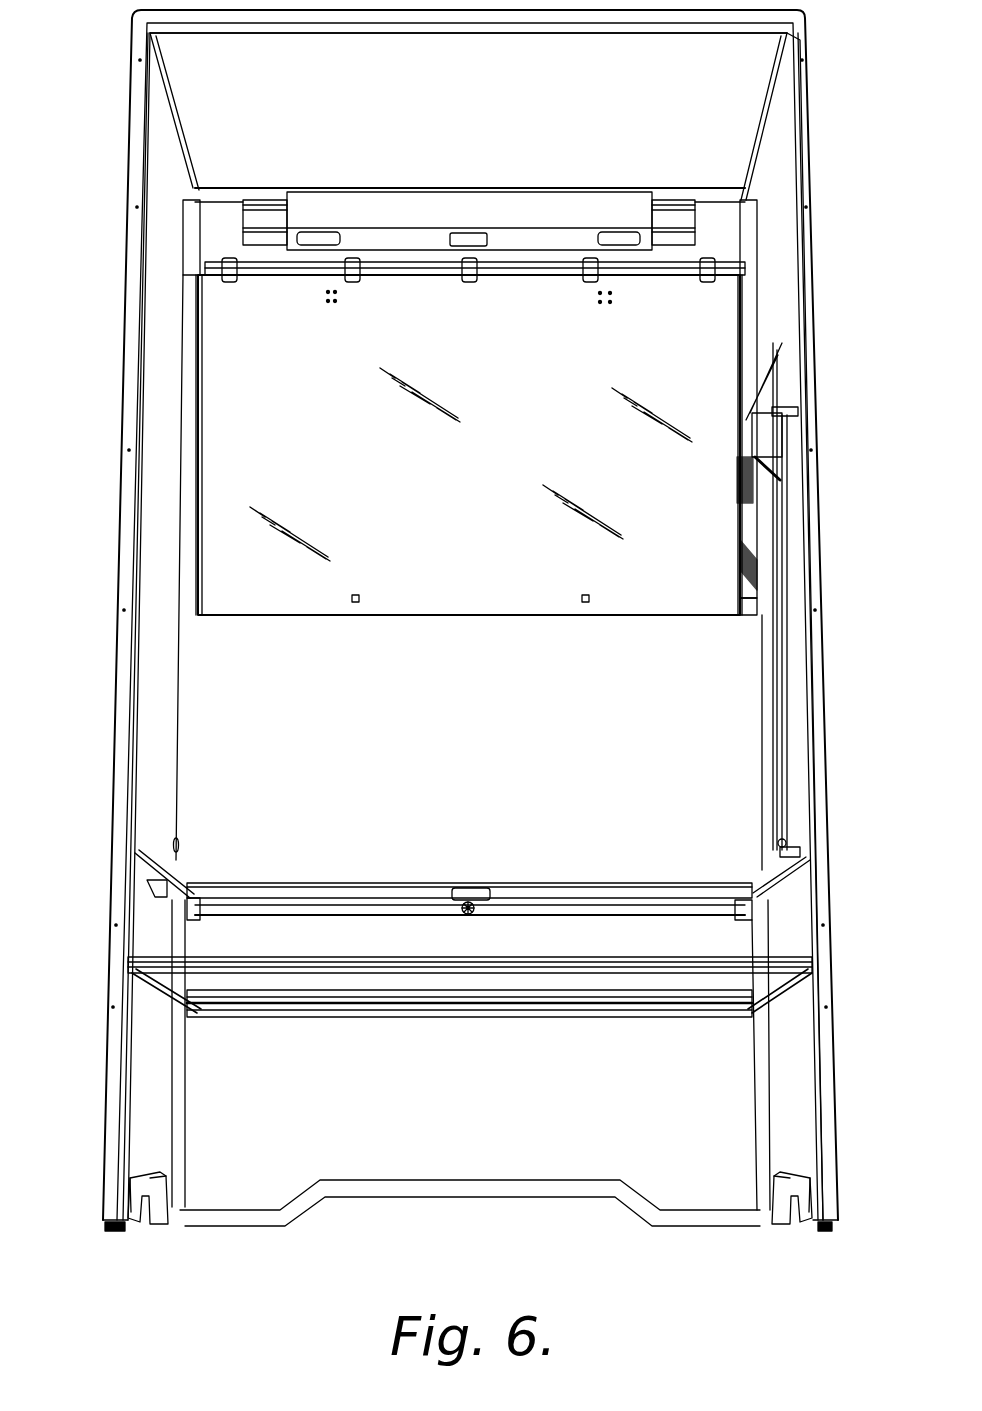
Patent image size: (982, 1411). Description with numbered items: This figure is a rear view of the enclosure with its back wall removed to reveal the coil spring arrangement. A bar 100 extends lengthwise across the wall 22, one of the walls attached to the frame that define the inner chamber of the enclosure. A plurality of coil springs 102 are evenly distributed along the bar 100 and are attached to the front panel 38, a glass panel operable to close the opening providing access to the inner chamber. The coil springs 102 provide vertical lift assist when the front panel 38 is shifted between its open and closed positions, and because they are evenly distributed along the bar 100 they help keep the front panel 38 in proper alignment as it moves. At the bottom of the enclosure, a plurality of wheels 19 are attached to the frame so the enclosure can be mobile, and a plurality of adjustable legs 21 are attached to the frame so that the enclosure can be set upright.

The wall 22 is at (135, 147).
The bar 100 is at (660, 265).
The coil springs 102 is at (350, 277).
The front panel 38 is at (642, 550).
The wheels 19 is at (168, 1230).
The adjustable legs 21 is at (108, 1230).